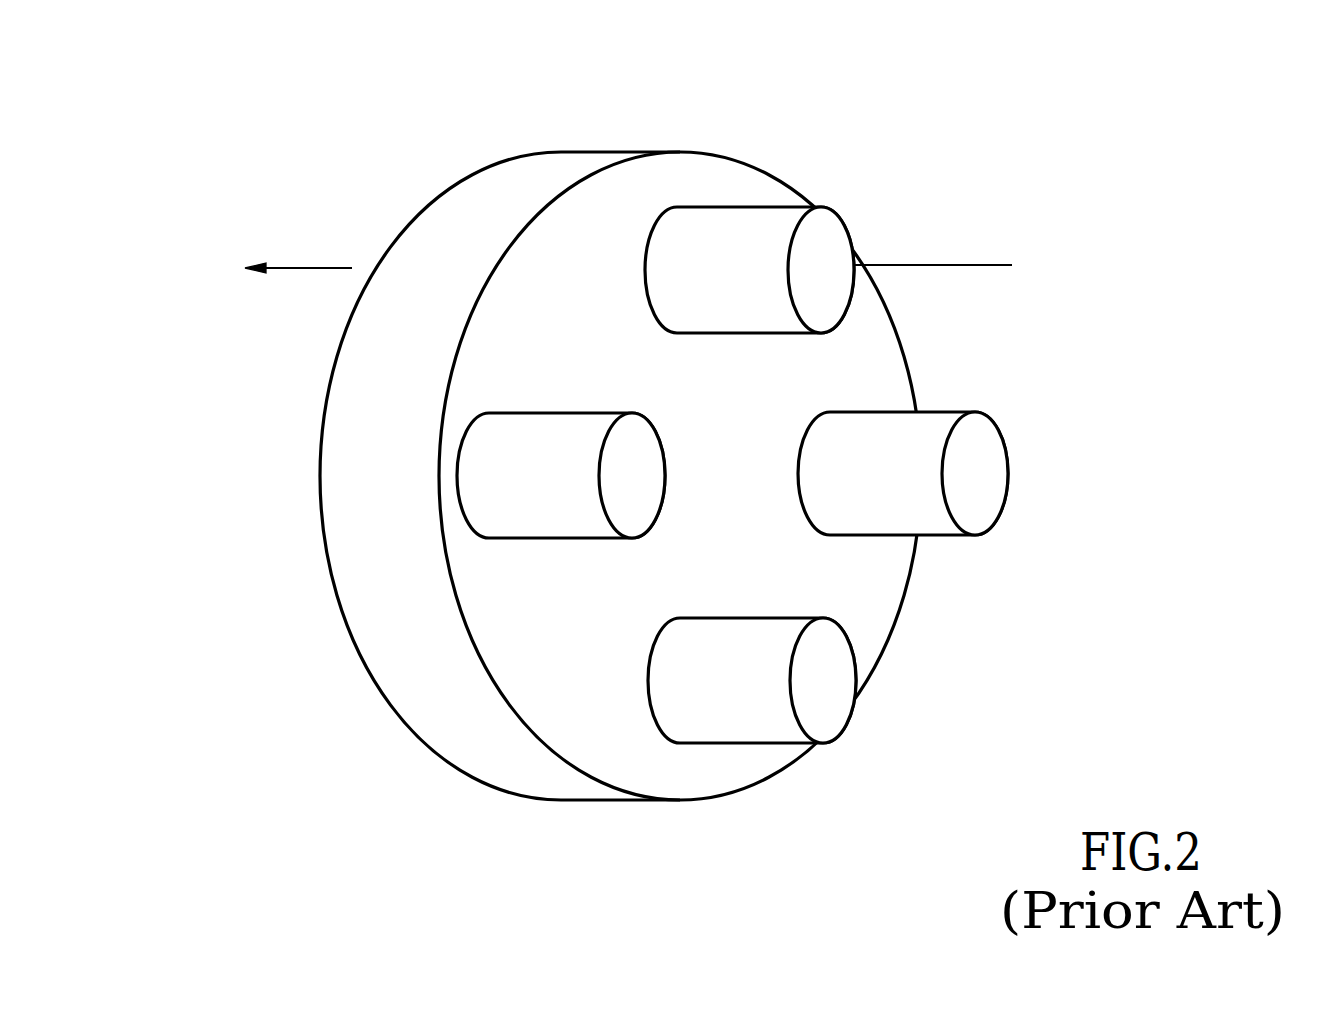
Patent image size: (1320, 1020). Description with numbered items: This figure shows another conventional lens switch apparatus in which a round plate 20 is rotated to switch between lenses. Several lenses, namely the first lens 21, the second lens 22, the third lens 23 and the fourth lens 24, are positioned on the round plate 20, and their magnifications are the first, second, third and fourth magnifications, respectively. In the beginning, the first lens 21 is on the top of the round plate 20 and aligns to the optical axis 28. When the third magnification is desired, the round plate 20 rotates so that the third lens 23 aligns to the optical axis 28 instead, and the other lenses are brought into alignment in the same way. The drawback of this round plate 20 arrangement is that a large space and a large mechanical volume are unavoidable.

The round plate 20 is at (648, 133).
The first lens 21 is at (755, 224).
The second lens 22 is at (483, 478).
The third lens 23 is at (743, 708).
The fourth lens 24 is at (982, 460).
The optical axis 28 is at (959, 257).